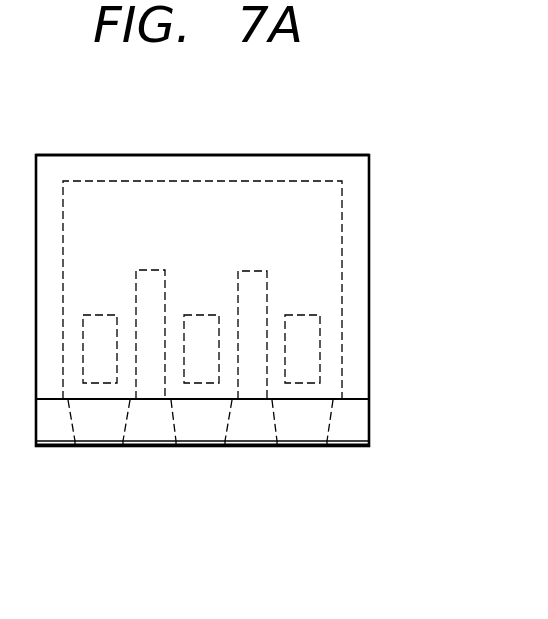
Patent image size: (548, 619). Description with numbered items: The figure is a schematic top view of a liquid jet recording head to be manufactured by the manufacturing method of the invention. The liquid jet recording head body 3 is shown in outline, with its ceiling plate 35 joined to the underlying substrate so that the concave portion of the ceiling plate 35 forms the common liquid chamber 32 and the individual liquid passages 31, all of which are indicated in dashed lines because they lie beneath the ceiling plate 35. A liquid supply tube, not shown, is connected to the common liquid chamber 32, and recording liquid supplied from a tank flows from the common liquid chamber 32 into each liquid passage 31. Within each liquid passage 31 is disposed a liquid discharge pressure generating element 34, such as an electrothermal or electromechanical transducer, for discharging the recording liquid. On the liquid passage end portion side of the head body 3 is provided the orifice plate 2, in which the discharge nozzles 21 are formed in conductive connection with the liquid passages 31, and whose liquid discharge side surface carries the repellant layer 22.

The liquid jet recording head body 3 is at (331, 154).
The ceiling plate 35 is at (169, 164).
The common liquid chamber 32 is at (322, 205).
The liquid passage 31 is at (322, 284).
The liquid discharge pressure generating element 34 is at (307, 346).
The discharge port formation plate 2 is at (357, 417).
The discharge nozzle 21 is at (300, 427).
The repellant layer 22 is at (370, 444).